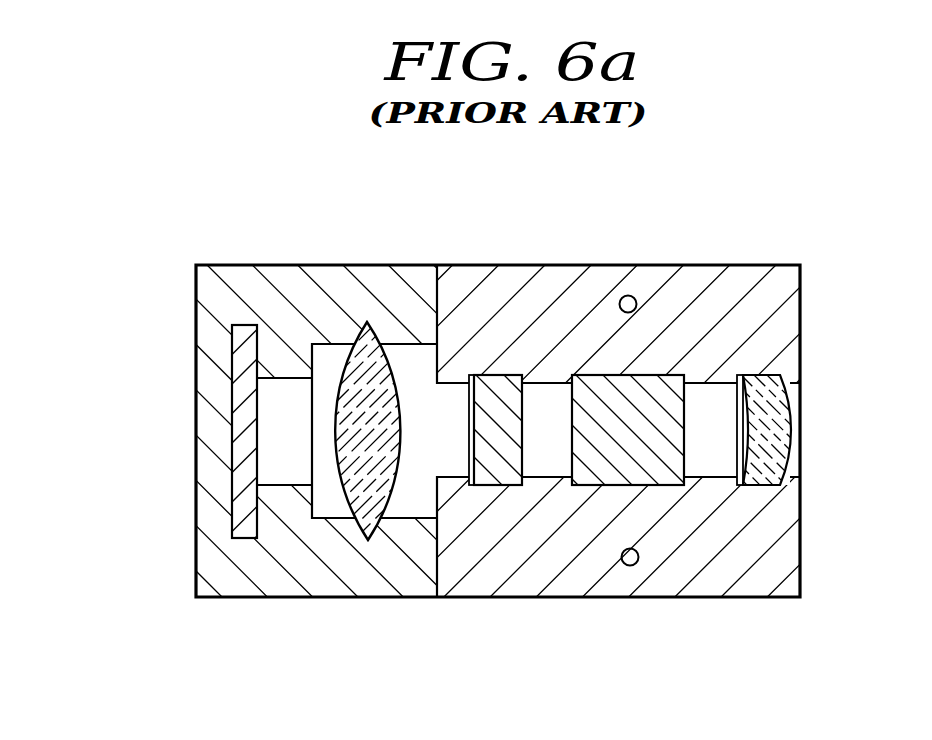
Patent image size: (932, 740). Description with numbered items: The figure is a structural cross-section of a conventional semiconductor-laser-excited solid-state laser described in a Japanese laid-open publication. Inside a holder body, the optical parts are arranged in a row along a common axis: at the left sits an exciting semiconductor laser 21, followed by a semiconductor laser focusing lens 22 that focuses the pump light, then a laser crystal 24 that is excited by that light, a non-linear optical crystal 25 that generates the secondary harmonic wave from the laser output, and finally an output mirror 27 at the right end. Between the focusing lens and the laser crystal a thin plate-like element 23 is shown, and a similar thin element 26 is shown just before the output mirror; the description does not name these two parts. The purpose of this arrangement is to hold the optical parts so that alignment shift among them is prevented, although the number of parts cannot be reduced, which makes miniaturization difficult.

The exciting semiconductor laser 21 is at (243, 438).
The semiconductor laser focusing lens 22 is at (370, 532).
The spacer plate 23 is at (471, 461).
The laser crystal 24 is at (497, 475).
The non-linear optical crystal 25 is at (667, 477).
The filter plate 26 is at (735, 485).
The output mirror 27 is at (780, 431).